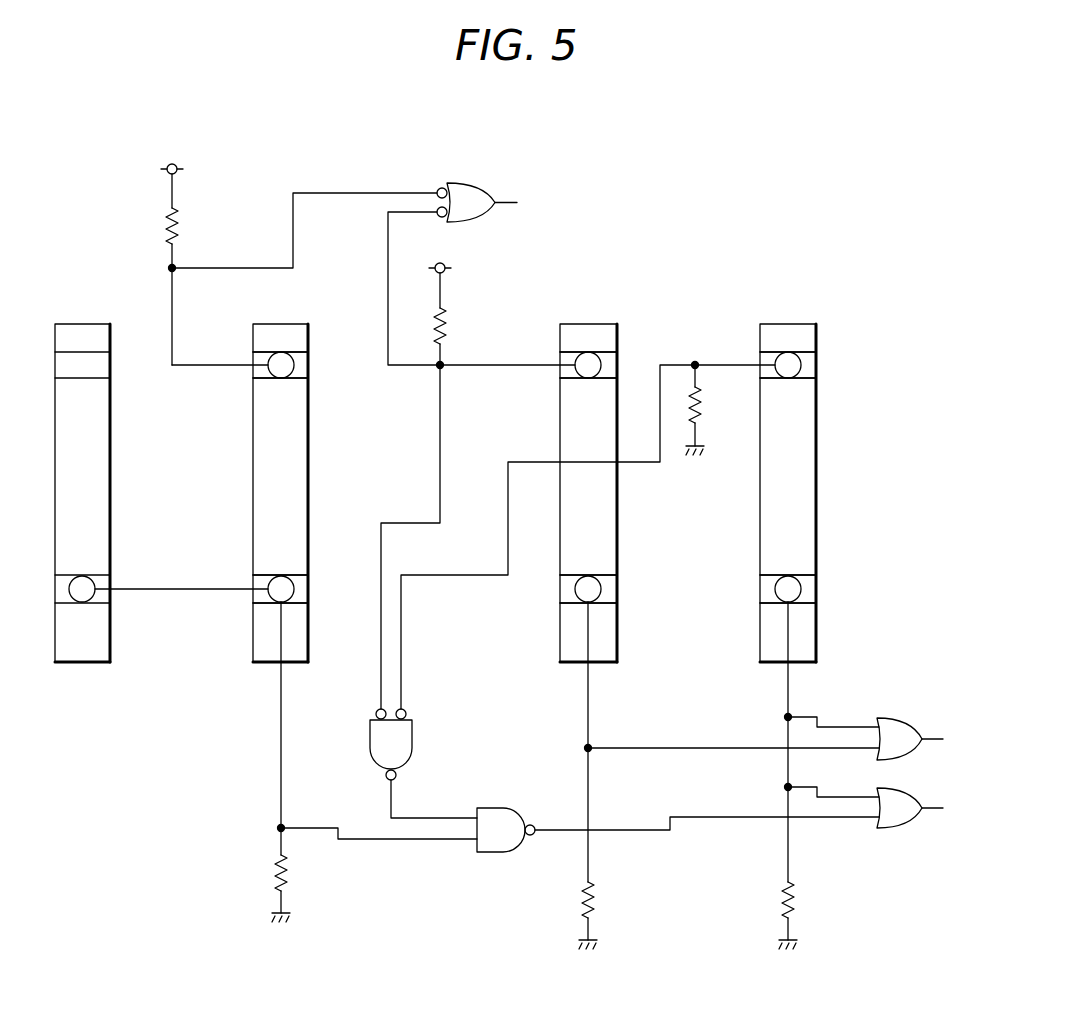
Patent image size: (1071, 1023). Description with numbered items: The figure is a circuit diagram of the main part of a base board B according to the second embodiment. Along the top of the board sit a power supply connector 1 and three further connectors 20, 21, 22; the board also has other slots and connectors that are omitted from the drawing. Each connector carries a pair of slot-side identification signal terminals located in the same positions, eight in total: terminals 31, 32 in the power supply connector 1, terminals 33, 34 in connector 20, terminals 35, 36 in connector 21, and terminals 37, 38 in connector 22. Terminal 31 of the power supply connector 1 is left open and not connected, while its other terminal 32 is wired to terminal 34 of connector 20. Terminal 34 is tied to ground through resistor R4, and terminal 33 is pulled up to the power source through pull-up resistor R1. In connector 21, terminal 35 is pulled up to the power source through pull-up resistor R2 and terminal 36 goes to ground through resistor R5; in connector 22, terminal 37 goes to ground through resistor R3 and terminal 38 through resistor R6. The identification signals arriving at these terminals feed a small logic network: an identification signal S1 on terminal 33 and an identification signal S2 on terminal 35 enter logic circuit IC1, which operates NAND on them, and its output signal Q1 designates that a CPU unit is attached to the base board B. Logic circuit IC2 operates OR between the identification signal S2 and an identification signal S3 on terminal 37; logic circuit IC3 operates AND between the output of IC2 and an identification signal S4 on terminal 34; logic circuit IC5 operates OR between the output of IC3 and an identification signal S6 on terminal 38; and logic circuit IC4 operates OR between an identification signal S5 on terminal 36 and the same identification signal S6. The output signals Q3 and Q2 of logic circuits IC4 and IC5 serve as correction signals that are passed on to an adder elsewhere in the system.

The power supply connector 1 is at (80, 330).
The connector 20 is at (279, 330).
The connector 21 is at (586, 330).
The connector 22 is at (786, 330).
The slot-side identification signal terminal 31 is at (104, 367).
The slot-side identification signal terminal 32 is at (104, 598).
The slot-side identification signal terminal 33 is at (303, 375).
The slot-side identification signal terminal 34 is at (303, 598).
The slot-side identification signal terminal 35 is at (565, 376).
The slot-side identification signal terminal 36 is at (610, 598).
The slot-side identification signal terminal 37 is at (810, 375).
The slot-side identification signal terminal 38 is at (810, 598).
The base board B is at (753, 237).
The identification signal S1 is at (297, 366).
The identification signal S2 is at (606, 366).
The identification signal S3 is at (805, 366).
The identification signal S4 is at (297, 586).
The identification signal S5 is at (606, 586).
The identification signal S6 is at (805, 586).
The pull-up resistor R1 is at (147, 264).
The pull-up resistor R2 is at (465, 315).
The resistor R3 is at (709, 409).
The resistor R4 is at (297, 888).
The resistor R5 is at (604, 915).
The resistor R6 is at (804, 915).
The logic circuit IC1 is at (458, 188).
The logic circuit IC2 is at (423, 756).
The logic circuit IC3 is at (678, 816).
The logic circuit IC4 is at (907, 721).
The logic circuit IC5 is at (907, 828).
The output signal Q1 is at (535, 207).
The output signal (correction signal) Q2 is at (934, 838).
The output signal (correction signal) Q3 is at (934, 769).